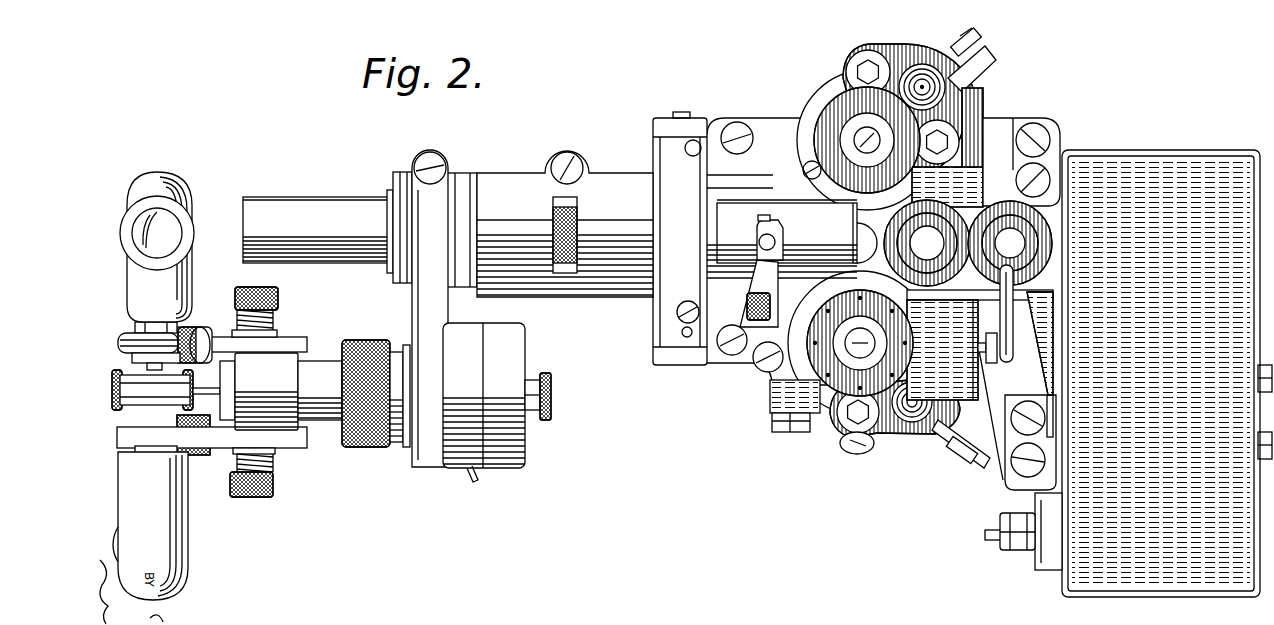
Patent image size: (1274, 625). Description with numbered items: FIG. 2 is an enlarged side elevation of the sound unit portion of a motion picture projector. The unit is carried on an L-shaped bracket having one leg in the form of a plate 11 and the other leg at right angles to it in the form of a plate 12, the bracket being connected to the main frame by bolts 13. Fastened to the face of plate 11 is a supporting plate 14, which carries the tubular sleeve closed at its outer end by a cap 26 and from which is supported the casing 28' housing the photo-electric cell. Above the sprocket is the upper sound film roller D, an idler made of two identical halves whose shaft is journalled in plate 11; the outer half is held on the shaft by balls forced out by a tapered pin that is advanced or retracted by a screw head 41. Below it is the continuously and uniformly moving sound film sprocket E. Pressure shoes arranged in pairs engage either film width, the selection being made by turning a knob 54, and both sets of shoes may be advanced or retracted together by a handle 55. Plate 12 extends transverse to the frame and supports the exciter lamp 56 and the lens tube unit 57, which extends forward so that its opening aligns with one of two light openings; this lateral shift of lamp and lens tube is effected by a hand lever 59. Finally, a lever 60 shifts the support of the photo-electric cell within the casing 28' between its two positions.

The plate 11 is at (750, 120).
The plate 12 is at (675, 128).
The bolts 13 is at (1043, 133).
The supporting plate 14 is at (978, 170).
The cap 26 is at (945, 228).
The casing 28' is at (1167, 359).
The screw head 41 is at (865, 140).
The knob 54 is at (910, 83).
The handle 55 is at (1007, 323).
The exciter lamp 56 is at (176, 191).
The lens tube unit 57 is at (788, 218).
The hand lever 59 is at (783, 260).
The lever 60 is at (995, 531).
The upper sound film roller D is at (843, 108).
The sound film sprocket E is at (827, 353).